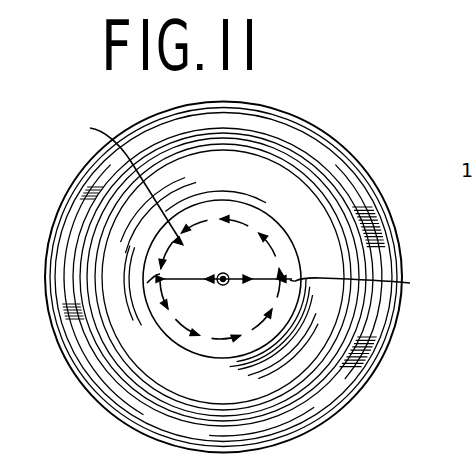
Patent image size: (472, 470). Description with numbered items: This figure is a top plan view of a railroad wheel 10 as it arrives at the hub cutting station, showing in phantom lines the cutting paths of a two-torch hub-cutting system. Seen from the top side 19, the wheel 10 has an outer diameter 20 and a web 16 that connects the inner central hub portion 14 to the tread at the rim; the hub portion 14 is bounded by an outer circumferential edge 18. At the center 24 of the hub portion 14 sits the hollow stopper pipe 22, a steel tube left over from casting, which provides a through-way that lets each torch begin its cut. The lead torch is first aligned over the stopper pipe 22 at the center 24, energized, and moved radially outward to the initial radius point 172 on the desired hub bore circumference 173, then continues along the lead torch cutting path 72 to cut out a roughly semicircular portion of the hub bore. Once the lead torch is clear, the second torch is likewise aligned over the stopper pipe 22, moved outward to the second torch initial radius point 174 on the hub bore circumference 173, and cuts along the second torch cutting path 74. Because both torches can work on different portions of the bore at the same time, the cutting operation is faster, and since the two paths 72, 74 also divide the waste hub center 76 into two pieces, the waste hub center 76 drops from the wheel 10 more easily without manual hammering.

The railroad wheel 10 is at (305, 173).
The inner central hub portion 14 is at (266, 252).
The web 16 is at (323, 200).
The outer circumferential edge 18 is at (185, 348).
The top side 19 is at (107, 334).
The outer diameter 20 is at (368, 170).
The stopper pipe 22 is at (224, 276).
The center 24 is at (223, 285).
The lead torch cutting path 72 is at (240, 341).
The second torch cutting path 74 is at (238, 218).
The waste hub center 76 is at (213, 220).
The initial radius point 172 is at (150, 280).
The hub bore circumference 173 is at (118, 180).
The second torch initial radius point 174 is at (368, 282).